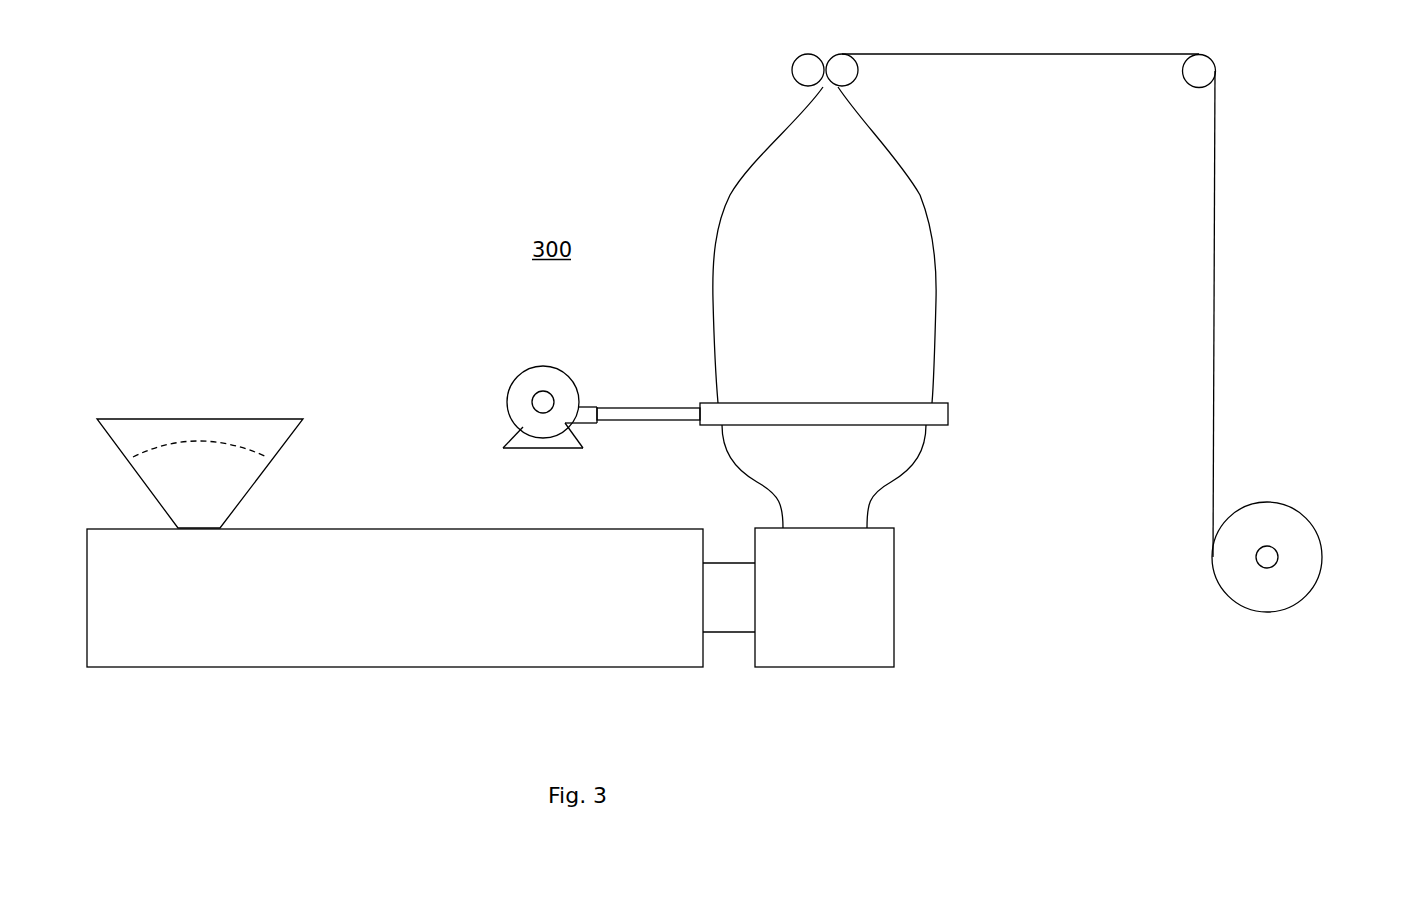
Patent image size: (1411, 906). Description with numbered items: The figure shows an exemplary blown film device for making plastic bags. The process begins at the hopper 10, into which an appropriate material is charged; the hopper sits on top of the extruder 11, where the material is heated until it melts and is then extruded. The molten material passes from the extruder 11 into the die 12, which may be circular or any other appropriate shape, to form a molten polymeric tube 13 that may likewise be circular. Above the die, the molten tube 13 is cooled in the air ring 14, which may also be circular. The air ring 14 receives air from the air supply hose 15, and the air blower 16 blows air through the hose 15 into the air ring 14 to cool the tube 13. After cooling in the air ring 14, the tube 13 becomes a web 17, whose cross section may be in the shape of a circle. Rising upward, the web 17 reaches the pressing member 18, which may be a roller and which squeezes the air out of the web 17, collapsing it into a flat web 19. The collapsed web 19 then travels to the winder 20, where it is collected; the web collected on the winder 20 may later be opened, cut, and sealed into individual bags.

The hopper 10 is at (202, 487).
The extruder 11 is at (400, 603).
The die 12 is at (827, 612).
The molten polymeric tube 13 is at (873, 497).
The air ring 14 is at (950, 412).
The air supply hose 15 is at (662, 408).
The air blower 16 is at (542, 380).
The web 17 is at (937, 297).
The pressing member 18 is at (853, 85).
The flat web 19 is at (1215, 145).
The winder 20 is at (1297, 504).